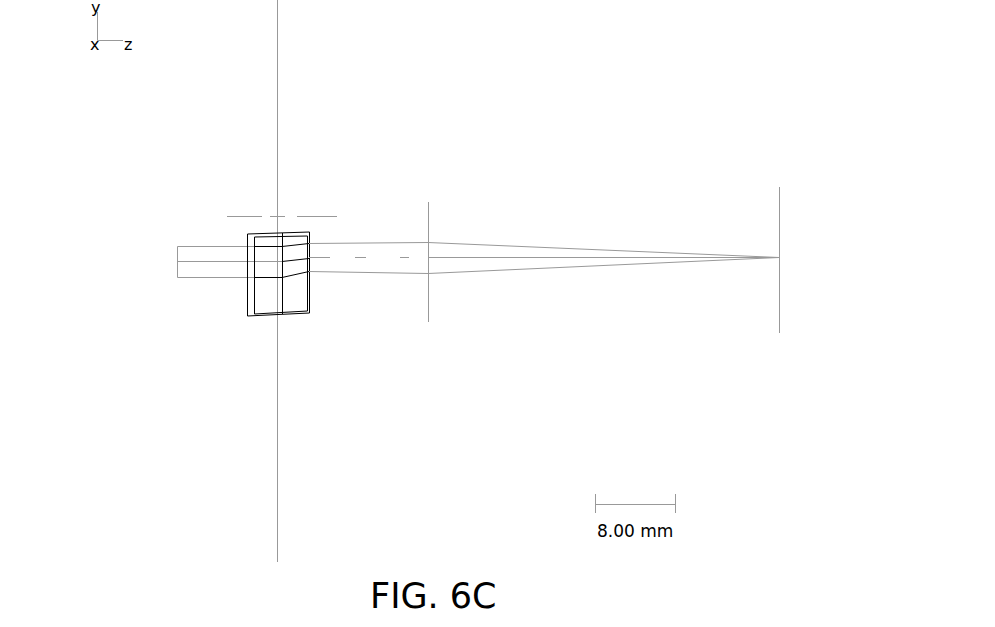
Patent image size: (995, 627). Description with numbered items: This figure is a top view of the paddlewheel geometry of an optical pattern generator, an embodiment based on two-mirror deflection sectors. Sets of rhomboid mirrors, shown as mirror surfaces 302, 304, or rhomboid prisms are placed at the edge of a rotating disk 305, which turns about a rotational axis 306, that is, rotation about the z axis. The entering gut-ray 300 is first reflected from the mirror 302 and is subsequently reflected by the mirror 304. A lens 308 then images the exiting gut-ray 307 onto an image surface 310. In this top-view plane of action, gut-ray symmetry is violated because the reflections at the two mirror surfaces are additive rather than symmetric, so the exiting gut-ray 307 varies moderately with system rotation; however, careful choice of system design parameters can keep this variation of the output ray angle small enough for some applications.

The entering gut-ray 300 is at (212, 261).
The rhomboid mirror surface 302 is at (248, 315).
The rhomboid mirror surface 304 is at (307, 307).
The rotating disk 305 is at (278, 83).
The rotational axis 306 is at (239, 217).
The exiting gut-ray 307 is at (381, 257).
The lens 308 is at (428, 293).
The image surface 310 is at (778, 313).